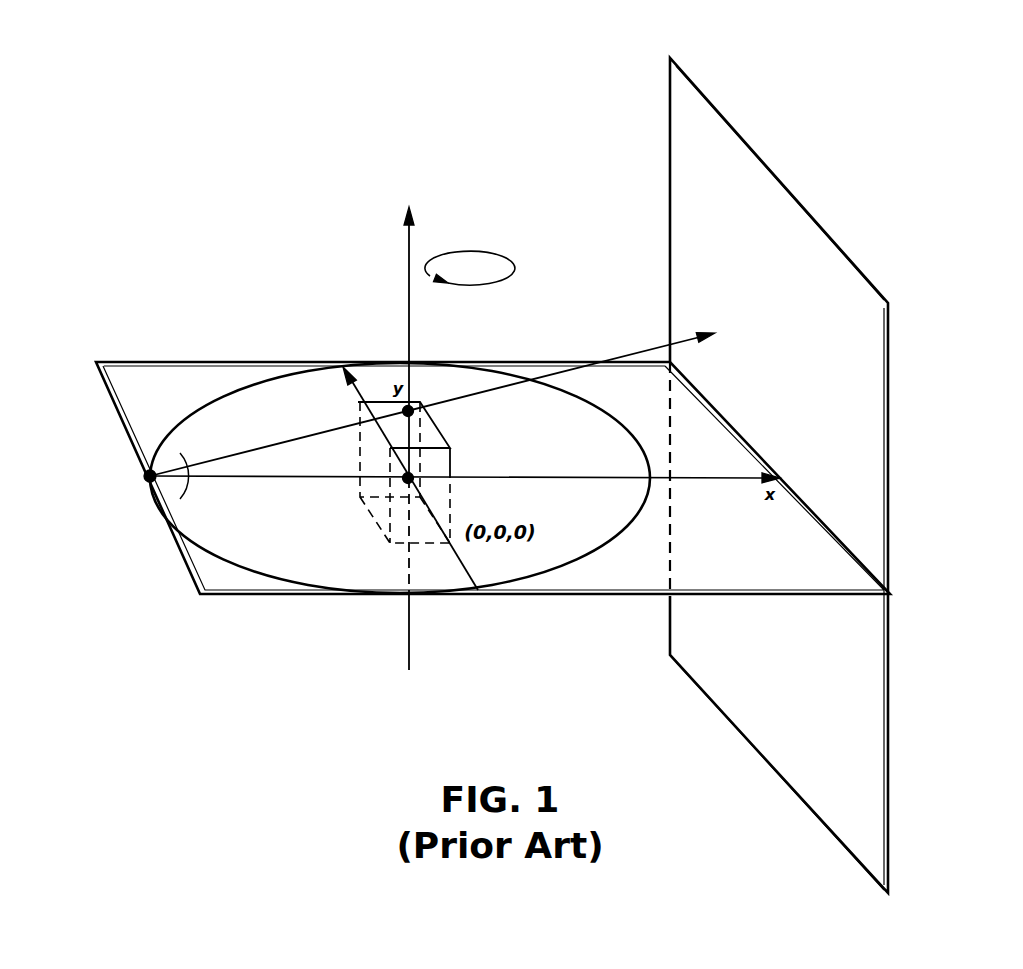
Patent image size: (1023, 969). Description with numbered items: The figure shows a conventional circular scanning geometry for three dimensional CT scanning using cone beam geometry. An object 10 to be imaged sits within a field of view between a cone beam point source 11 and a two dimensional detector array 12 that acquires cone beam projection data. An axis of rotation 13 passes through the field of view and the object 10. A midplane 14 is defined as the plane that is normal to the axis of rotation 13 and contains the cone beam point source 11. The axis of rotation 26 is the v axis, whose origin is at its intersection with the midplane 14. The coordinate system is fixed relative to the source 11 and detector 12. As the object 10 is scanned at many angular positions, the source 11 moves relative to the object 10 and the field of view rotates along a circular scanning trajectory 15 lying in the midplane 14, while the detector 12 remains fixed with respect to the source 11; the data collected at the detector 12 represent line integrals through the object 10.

The object 10 is at (453, 457).
The cone beam point source 11 is at (150, 476).
The two dimensional detector array 12 is at (875, 283).
The axis of rotation 13 is at (410, 352).
The midplane 14 is at (242, 596).
The circular scanning trajectory 15 is at (200, 405).
The axis of rotation 26 is at (470, 289).